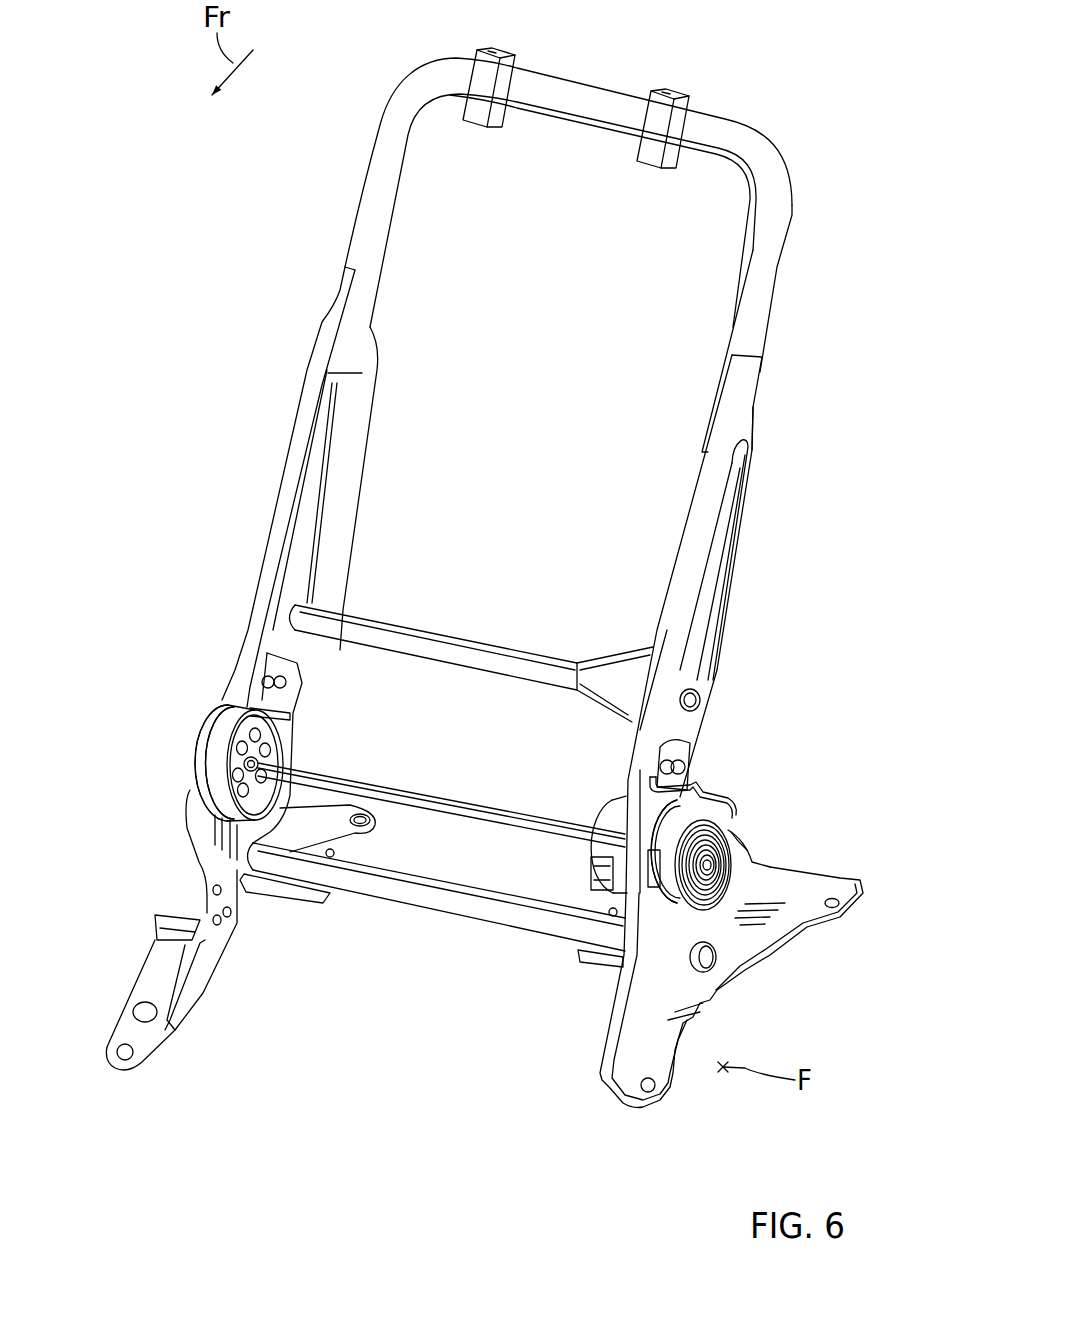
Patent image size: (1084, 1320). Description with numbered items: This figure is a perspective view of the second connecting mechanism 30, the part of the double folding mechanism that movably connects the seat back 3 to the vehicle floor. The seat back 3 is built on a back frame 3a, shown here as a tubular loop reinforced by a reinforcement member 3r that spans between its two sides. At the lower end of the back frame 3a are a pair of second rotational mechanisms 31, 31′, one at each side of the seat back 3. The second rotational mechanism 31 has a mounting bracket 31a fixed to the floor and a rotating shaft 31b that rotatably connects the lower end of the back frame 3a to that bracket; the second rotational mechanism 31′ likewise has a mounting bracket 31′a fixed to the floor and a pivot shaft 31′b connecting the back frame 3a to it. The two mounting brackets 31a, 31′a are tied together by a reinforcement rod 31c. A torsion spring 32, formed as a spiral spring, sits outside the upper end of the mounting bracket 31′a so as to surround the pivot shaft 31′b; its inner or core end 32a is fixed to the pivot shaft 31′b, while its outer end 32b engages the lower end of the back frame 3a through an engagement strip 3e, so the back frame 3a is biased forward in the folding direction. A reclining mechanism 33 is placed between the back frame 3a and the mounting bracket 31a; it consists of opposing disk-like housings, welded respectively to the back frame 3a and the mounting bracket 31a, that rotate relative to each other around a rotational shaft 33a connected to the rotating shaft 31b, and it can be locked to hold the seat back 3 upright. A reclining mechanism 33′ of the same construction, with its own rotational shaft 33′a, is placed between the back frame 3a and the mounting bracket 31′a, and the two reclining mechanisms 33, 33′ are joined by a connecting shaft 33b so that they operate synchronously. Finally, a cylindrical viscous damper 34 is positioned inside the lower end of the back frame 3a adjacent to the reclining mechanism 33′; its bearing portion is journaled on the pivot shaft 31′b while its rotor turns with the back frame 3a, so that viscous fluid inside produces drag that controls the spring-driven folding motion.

The seat back 3 is at (325, 192).
The back frame 3a is at (763, 268).
The reinforcement member 3r is at (453, 647).
The engagement strip 3e is at (712, 792).
The second connecting mechanism 30 is at (773, 677).
The second rotational mechanism 31 is at (223, 700).
The mounting bracket 31a is at (213, 850).
The rotating shaft 31b is at (217, 760).
The reinforcement rod 31c is at (440, 900).
The second rotational mechanism 31′ is at (722, 795).
The mounting bracket 31′a is at (657, 997).
The pivot shaft 31′b is at (748, 858).
The torsion spring 32 is at (733, 838).
The inner or core end 32a is at (772, 868).
The outer end 32b is at (728, 806).
The reclining mechanism 33 is at (212, 772).
The rotational shaft 33a is at (179, 749).
The connecting shaft 33b is at (420, 798).
The reclining mechanism 33′ is at (645, 828).
The rotational shaft 33′a is at (795, 851).
The viscous damper 34 is at (602, 860).